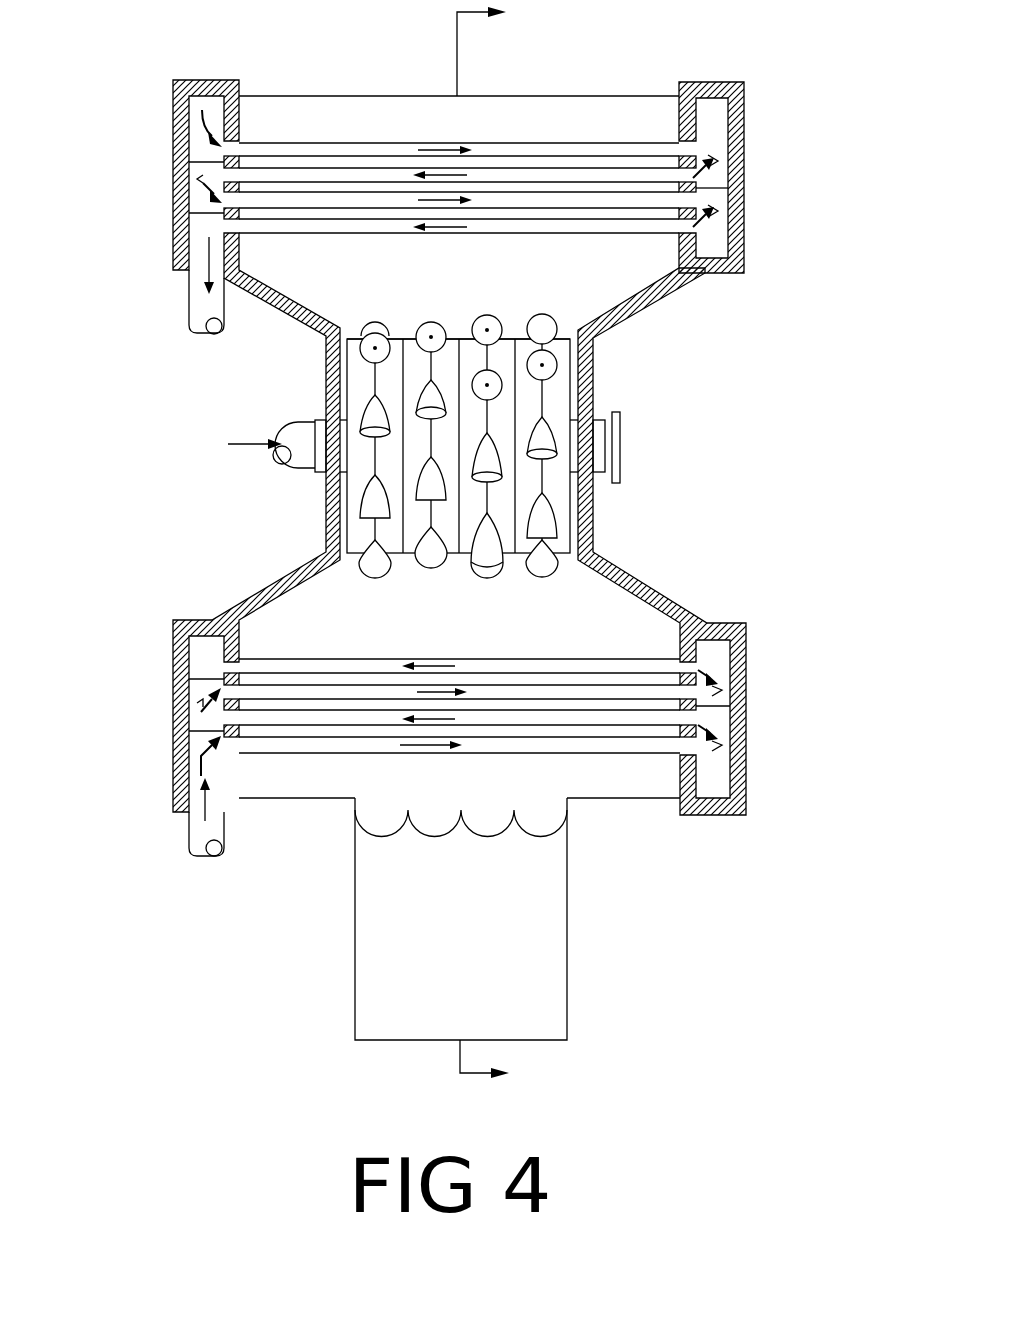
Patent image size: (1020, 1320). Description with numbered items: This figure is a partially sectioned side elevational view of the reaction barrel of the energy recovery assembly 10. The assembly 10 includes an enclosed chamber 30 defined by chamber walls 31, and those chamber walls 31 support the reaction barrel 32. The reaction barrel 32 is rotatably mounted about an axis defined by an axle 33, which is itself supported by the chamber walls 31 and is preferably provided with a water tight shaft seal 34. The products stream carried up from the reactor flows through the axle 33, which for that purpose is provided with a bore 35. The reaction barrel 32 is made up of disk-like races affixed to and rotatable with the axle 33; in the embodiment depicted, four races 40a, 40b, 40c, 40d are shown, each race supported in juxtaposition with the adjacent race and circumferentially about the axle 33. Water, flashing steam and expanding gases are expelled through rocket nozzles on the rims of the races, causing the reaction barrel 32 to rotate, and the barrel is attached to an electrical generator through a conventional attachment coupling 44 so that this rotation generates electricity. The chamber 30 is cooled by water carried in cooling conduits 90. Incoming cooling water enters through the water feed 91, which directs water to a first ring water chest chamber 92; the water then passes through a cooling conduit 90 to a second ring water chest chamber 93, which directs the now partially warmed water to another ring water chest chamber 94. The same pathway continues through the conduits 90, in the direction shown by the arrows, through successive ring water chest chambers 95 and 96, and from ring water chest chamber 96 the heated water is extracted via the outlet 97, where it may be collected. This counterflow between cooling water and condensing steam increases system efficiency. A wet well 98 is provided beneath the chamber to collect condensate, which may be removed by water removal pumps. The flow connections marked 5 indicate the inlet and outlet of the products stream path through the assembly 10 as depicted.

The fluid flow path 5 is at (500, 546).
The energy recovery assembly 10 is at (667, 925).
The enclosed chamber 30 is at (458, 454).
The chamber walls 31 is at (262, 302).
The reaction barrel 32 is at (455, 315).
The axle 33 is at (277, 423).
The water tight shaft seal 34 is at (323, 418).
The bore 35 is at (235, 445).
The disk-like race 40a is at (390, 580).
The disk-like race 40b is at (405, 327).
The disk-like race 40c is at (506, 583).
The disk-like race 40d is at (518, 327).
The attachment coupling 44 is at (620, 447).
The cooling conduits 90 is at (268, 200).
The water feed 91 is at (202, 850).
The first ring water chest chamber 92 is at (197, 140).
The second ring water chest chamber 93 is at (713, 128).
The ring water chest chamber 94 is at (197, 200).
The ring water chest chamber 95 is at (713, 239).
The ring water chest chamber 96 is at (205, 228).
The outlet 97 is at (197, 335).
The wet well 98 is at (461, 919).